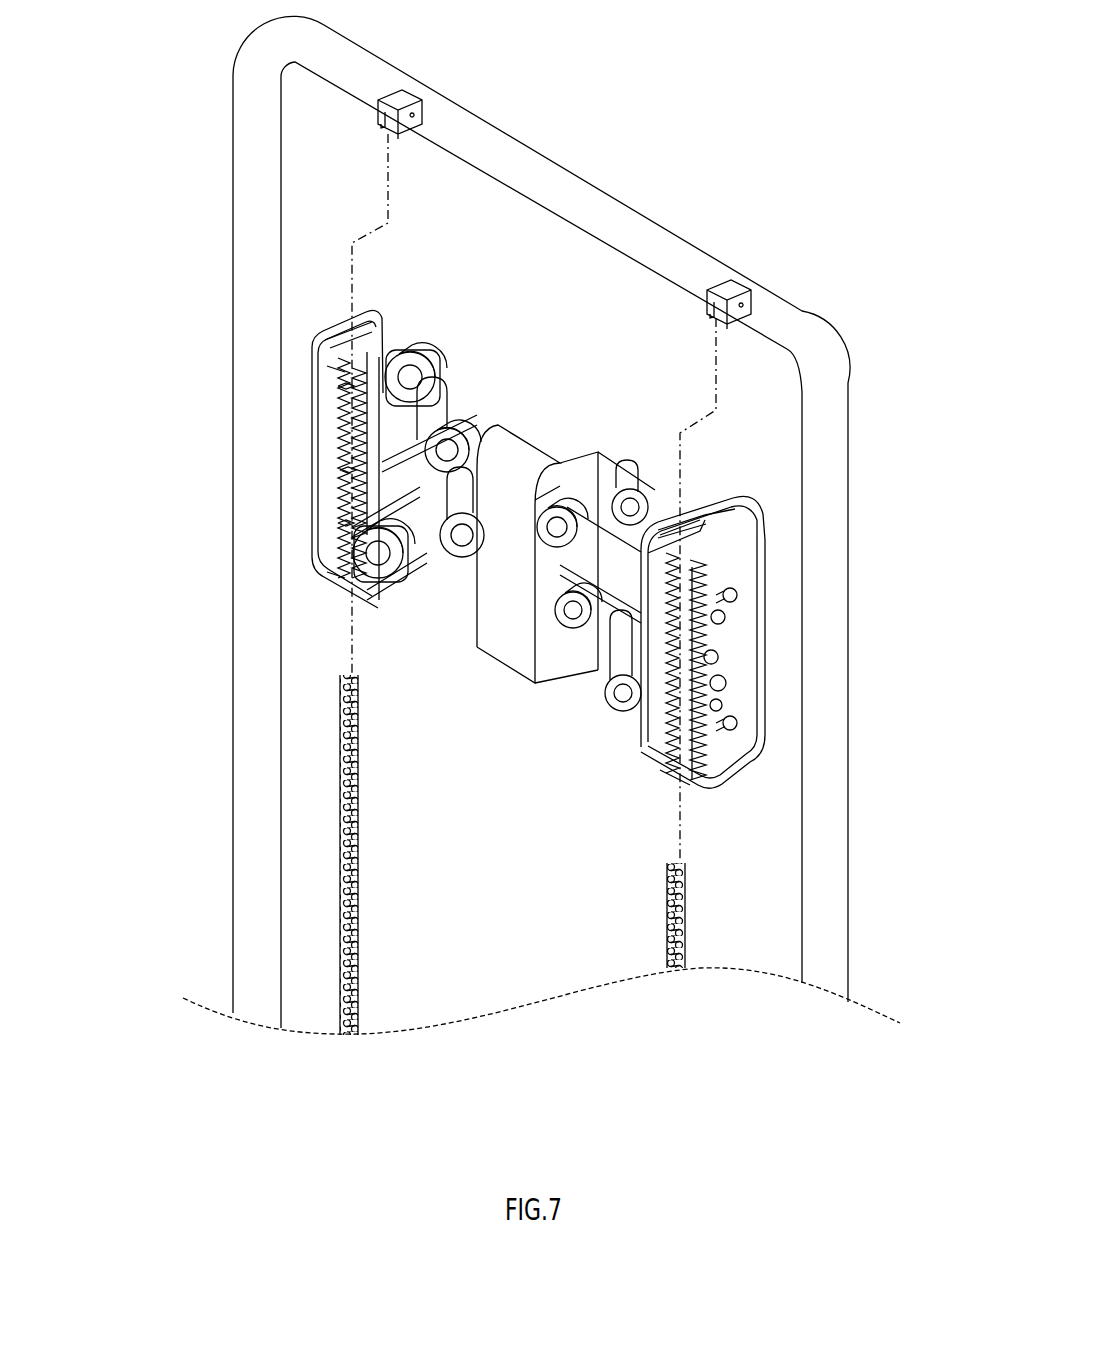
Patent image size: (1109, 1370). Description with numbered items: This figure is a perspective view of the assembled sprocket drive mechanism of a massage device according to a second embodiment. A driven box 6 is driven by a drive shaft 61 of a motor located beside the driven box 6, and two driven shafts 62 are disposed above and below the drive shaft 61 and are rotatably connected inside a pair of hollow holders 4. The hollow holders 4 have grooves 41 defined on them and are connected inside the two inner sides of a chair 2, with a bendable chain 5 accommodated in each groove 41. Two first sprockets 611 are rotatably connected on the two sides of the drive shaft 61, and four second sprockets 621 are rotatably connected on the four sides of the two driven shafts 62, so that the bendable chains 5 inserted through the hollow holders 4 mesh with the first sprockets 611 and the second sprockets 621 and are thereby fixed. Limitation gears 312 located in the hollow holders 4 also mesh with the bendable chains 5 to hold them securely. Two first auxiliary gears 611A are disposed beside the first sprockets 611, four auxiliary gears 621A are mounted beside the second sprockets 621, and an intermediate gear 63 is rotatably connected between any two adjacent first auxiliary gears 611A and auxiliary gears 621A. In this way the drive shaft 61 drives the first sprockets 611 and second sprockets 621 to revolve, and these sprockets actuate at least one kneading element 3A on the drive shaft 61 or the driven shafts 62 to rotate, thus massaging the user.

The chair 2 is at (562, 188).
The kneading element 3A is at (492, 400).
The hollow holder 4 is at (307, 350).
The groove 41 is at (343, 343).
The bendable chain 5 is at (340, 770).
The driven box 6 is at (560, 440).
The drive shaft 61 is at (737, 663).
The first sprocket 611 is at (347, 473).
The first auxiliary gear 611A is at (745, 648).
The driven shaft 62 is at (757, 592).
The second sprocket 621 is at (352, 400).
The auxiliary gear 621A is at (340, 390).
The intermediate gear 63 is at (340, 435).
The limitation gear 312 is at (333, 372).